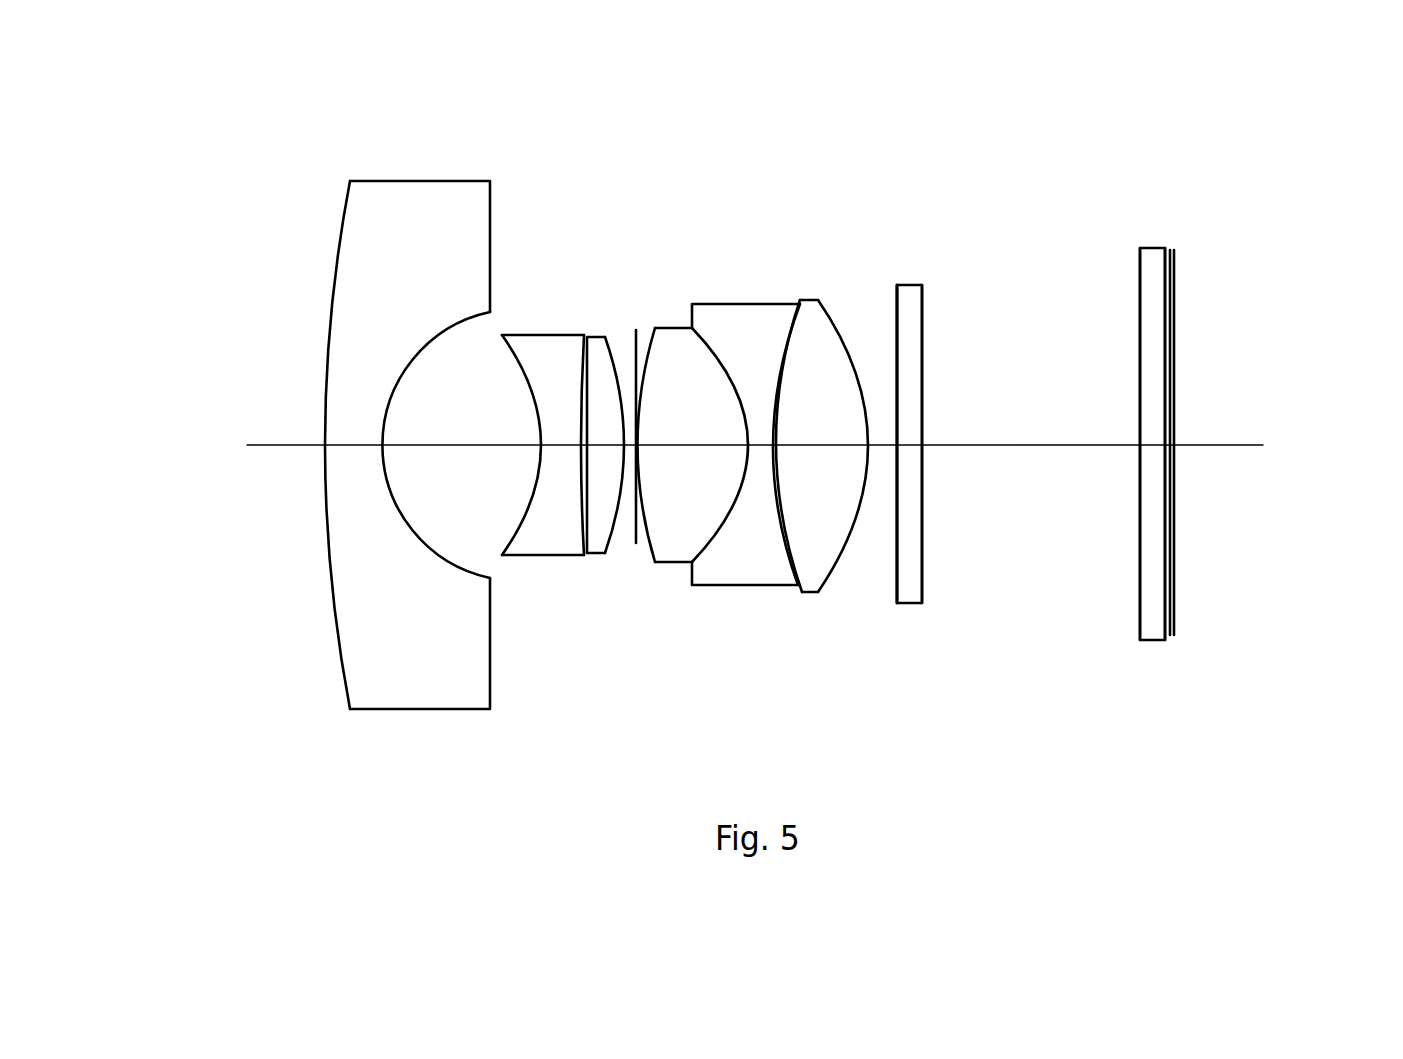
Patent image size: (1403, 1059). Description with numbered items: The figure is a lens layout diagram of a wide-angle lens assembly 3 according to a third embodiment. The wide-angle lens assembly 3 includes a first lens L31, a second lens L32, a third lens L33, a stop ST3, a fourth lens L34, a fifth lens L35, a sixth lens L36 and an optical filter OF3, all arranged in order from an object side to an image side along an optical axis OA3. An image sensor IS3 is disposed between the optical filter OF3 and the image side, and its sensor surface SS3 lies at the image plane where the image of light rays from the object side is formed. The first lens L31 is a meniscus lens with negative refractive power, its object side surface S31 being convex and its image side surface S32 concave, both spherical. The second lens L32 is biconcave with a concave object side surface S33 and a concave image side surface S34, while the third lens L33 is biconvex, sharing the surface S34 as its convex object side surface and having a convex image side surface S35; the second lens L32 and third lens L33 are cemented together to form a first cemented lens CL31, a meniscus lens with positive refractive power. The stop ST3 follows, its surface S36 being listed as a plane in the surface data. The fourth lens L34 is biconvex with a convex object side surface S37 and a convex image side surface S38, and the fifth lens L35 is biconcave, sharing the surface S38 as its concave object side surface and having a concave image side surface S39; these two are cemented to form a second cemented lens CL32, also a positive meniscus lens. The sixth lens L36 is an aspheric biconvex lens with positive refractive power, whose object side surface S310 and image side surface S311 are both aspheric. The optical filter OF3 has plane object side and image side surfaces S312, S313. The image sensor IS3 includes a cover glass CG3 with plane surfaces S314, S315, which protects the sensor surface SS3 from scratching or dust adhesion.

The wide-angle lens assembly 3 is at (172, 96).
The optical axis OA3 is at (264, 447).
The first lens L31 is at (370, 439).
The second lens L32 is at (515, 412).
The third lens L33 is at (579, 427).
The fourth lens L34 is at (675, 467).
The fifth lens L35 is at (725, 487).
The sixth lens L36 is at (790, 494).
The first cemented lens CL31 is at (575, 121).
The second cemented lens CL32 is at (738, 183).
The stop ST3 is at (636, 330).
The optical filter OF3 is at (925, 490).
The image sensor IS3 is at (1322, 148).
The cover glass CG3 is at (1141, 460).
The sensor surface SS3 is at (1257, 396).
The object side surface of the first lens S31 is at (331, 553).
The image side surface of the first lens S32 is at (415, 538).
The object side surface of the second lens S33 is at (522, 530).
The image side surface of the second lens S34 is at (578, 517).
The image side surface of the third lens S35 is at (613, 530).
The stop surface S36 is at (636, 543).
The object side surface of the fourth lens S37 is at (647, 533).
The image side surface of the fourth lens S38 is at (785, 528).
The image side surface of the fifth lens S39 is at (787, 530).
The object side surface of the sixth lens S310 is at (818, 555).
The image side surface of the sixth lens S311 is at (840, 555).
The object side surface of the optical filter S312 is at (898, 563).
The image side surface of the optical filter S313 is at (922, 560).
The surface of the cover glass S314 is at (1140, 555).
The surface of the cover glass S315 is at (1164, 597).